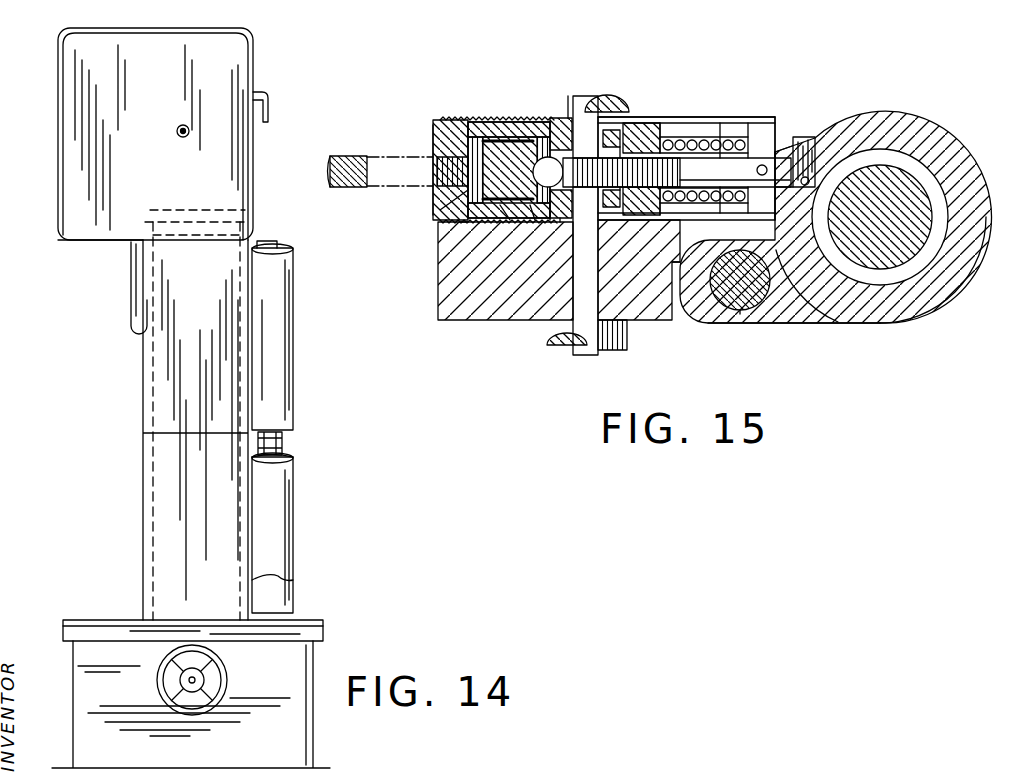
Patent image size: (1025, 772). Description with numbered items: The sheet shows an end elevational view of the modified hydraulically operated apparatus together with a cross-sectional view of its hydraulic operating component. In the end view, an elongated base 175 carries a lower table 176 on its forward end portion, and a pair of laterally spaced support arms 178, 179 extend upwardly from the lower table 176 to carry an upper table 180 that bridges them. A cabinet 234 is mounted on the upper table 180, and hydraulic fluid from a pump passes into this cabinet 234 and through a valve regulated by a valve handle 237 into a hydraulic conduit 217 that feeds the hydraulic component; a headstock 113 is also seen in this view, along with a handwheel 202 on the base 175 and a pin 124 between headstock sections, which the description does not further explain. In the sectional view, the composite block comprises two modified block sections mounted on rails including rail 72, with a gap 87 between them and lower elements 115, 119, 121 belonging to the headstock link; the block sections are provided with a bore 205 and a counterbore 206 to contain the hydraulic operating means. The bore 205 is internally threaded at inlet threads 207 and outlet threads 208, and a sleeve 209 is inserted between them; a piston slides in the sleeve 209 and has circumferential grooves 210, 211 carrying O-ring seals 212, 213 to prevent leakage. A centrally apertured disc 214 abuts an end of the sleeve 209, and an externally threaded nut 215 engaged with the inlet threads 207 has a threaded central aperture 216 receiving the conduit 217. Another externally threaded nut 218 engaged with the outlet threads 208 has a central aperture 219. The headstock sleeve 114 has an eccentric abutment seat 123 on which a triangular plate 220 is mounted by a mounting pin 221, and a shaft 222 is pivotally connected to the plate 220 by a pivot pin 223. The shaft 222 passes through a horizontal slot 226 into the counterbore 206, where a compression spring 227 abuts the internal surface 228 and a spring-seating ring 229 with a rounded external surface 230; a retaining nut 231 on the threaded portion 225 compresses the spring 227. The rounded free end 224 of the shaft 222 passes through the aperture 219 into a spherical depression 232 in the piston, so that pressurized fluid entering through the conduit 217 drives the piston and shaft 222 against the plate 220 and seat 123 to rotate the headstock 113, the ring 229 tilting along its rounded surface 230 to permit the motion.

In FIG. 14, the cabinet 234 is at (58, 106).
In FIG. 14, the valve handle 237 is at (265, 100).
In FIG. 14, the pivot pin 223 is at (187, 136).
In FIG. 15, the pivot pin 223 is at (790, 150).
In FIG. 14, the upper table 180 is at (250, 226).
In FIG. 14, the hydraulic conduit 217 is at (131, 266).
In FIG. 15, the hydraulic conduit 217 is at (345, 156).
In FIG. 14, the headstock 113 is at (293, 308).
In FIG. 15, the headstock 113 is at (969, 163).
In FIG. 14, the support arm 178 is at (143, 388).
In FIG. 14, the pin 124 is at (283, 440).
In FIG. 15, the pin 124 is at (892, 233).
In FIG. 14, the support arm 179 is at (278, 578).
In FIG. 14, the lower table 176 is at (324, 636).
In FIG. 14, the handwheel 202 is at (228, 692).
In FIG. 14, the elongated base 175 is at (313, 760).
In FIG. 15, the rail 72 is at (548, 344).
In FIG. 15, the gap 87 is at (684, 316).
In FIG. 15, the inlet threads 207 is at (460, 120).
In FIG. 15, the threaded central aperture 216 is at (437, 168).
In FIG. 15, the externally threaded nut 215 is at (433, 142).
In FIG. 15, the centrally apertured disc 214 is at (445, 205).
In FIG. 15, the bore 205 is at (508, 122).
In FIG. 15, the O-ring seal 212 is at (493, 122).
In FIG. 15, the sleeve 209 is at (510, 170).
In FIG. 15, the spherical depression 232 is at (508, 170).
In FIG. 15, the O-ring seal 213 is at (545, 157).
In FIG. 15, the outlet threads 208 is at (563, 140).
In FIG. 15, the free end 224 is at (568, 96).
In FIG. 15, the circumferential groove 210 is at (503, 218).
In FIG. 15, the circumferential groove 211 is at (536, 220).
In FIG. 15, the central aperture 219 is at (552, 220).
In FIG. 15, the externally threaded nut 218 is at (562, 222).
In FIG. 15, the retaining nut 231 is at (625, 108).
In FIG. 15, the rounded external surface 230 is at (660, 108).
In FIG. 15, the counterbore 206 is at (712, 118).
In FIG. 15, the externally threaded portion 225 is at (645, 222).
In FIG. 15, the spring-seating ring 229 is at (652, 222).
In FIG. 15, the compression spring 227 is at (712, 140).
In FIG. 15, the shaft 222 is at (745, 158).
In FIG. 15, the horizontal slot 226 is at (755, 123).
In FIG. 15, the triangular plate 220 is at (805, 137).
In FIG. 15, the abutment seat 123 is at (818, 150).
In FIG. 15, the sleeve 114 is at (985, 240).
In FIG. 15, the link arm 115 is at (800, 324).
In FIG. 15, the mounting pin 221 is at (880, 217).
In FIG. 15, the internal surface 228 is at (807, 286).
In FIG. 15, the bore 121 is at (752, 298).
In FIG. 15, the bore edge 119 is at (740, 312).